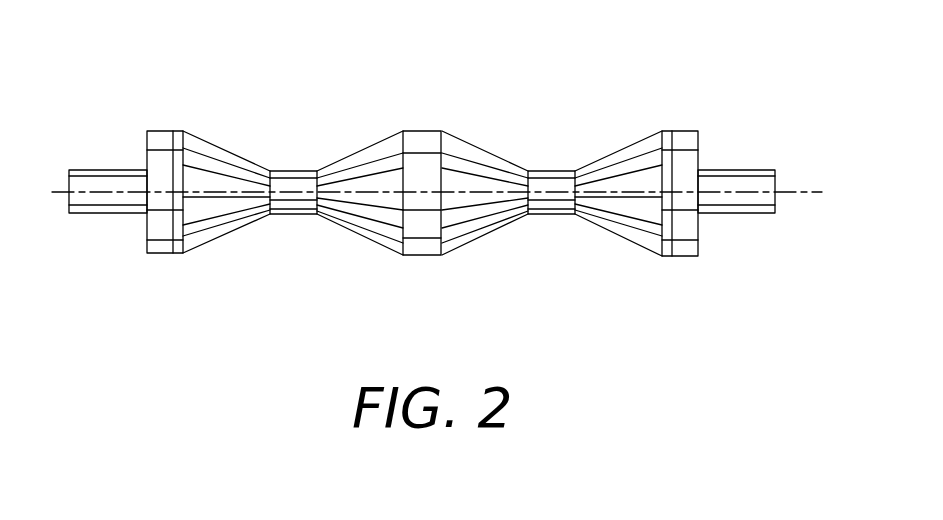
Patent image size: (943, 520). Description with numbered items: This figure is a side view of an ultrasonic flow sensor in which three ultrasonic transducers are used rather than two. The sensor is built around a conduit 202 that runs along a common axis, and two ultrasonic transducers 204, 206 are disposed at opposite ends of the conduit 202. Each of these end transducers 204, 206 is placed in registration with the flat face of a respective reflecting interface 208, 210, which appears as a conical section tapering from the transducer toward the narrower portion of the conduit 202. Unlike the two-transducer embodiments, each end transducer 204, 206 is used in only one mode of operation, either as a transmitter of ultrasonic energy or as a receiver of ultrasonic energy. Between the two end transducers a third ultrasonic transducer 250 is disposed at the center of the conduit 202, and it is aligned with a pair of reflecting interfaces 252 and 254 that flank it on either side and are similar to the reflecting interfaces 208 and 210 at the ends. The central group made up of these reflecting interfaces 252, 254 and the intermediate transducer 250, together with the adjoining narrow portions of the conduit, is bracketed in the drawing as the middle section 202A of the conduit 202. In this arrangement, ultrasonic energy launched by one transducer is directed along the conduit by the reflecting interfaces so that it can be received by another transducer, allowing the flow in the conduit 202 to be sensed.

The conduit 202 is at (115, 214).
The middle shaft section 202A is at (576, 253).
The ultrasonic transducer 204 is at (697, 256).
The ultrasonic transducer 206 is at (153, 253).
The reflecting interface 208 is at (622, 149).
The reflecting interface 210 is at (226, 150).
The third ultrasonic transducer 250 is at (422, 131).
The reflecting interface 252 is at (388, 139).
The reflecting interface 254 is at (450, 135).